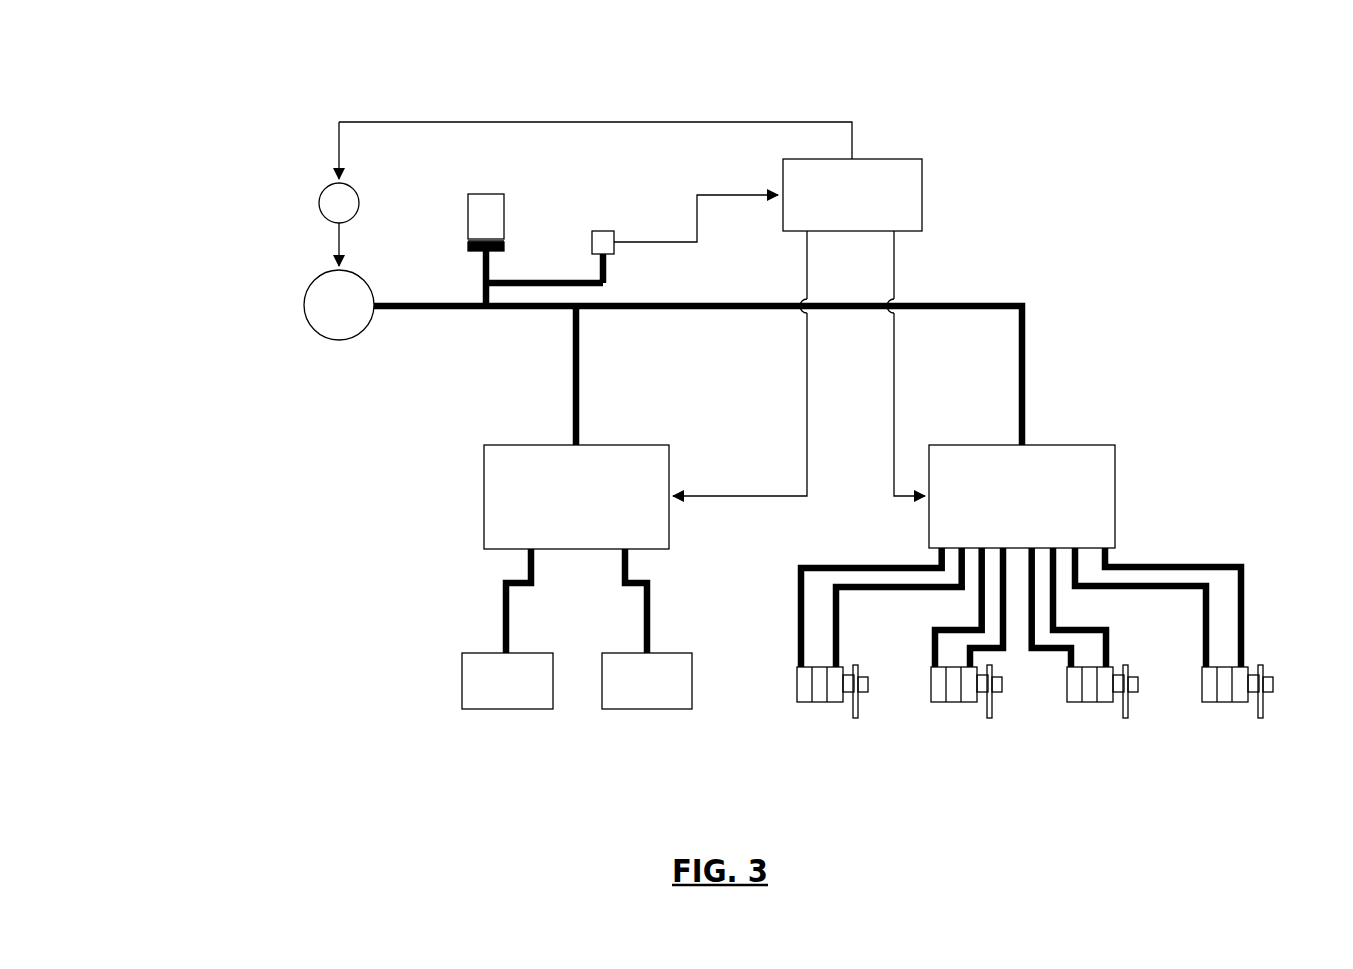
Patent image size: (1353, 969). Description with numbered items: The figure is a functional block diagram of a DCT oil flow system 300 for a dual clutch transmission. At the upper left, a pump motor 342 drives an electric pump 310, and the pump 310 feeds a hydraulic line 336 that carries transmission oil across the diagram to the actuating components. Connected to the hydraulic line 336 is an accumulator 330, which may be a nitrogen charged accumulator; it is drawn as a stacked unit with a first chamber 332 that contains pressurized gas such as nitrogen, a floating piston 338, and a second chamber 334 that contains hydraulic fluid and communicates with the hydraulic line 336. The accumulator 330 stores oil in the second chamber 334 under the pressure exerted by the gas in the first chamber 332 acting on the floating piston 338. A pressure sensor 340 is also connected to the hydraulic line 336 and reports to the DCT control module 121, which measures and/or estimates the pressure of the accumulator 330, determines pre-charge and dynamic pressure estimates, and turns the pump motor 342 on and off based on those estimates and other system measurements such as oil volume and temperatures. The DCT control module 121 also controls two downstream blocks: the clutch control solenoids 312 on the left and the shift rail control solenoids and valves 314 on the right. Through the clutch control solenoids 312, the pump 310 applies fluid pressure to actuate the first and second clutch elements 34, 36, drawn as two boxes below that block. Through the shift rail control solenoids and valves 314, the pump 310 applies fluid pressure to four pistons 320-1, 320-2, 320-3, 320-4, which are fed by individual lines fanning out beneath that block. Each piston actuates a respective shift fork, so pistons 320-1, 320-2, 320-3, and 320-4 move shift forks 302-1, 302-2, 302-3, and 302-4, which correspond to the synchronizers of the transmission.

The DCT oil flow system 300 is at (247, 100).
The pump motor 342 is at (318, 204).
The electric pump 310 is at (303, 305).
The hydraulic line 336 is at (457, 310).
The accumulator 330 is at (497, 228).
The first chamber 332 is at (467, 212).
The floating piston 338 is at (503, 238).
The second chamber 334 is at (467, 245).
The pressure sensor 340 is at (603, 230).
The DCT control module 121 is at (922, 195).
The clutch control solenoids 312 is at (484, 498).
The first clutch element 34 is at (461, 683).
The second clutch element 36 is at (692, 680).
The shift rail control solenoids and valves 314 is at (1115, 495).
The piston 320-1 is at (797, 688).
The shift fork 302-1 is at (855, 718).
The piston 320-2 is at (953, 702).
The shift fork 302-2 is at (990, 718).
The piston 320-3 is at (1088, 702).
The shift fork 302-3 is at (1126, 717).
The piston 320-4 is at (1223, 702).
The shift fork 302-4 is at (1265, 707).